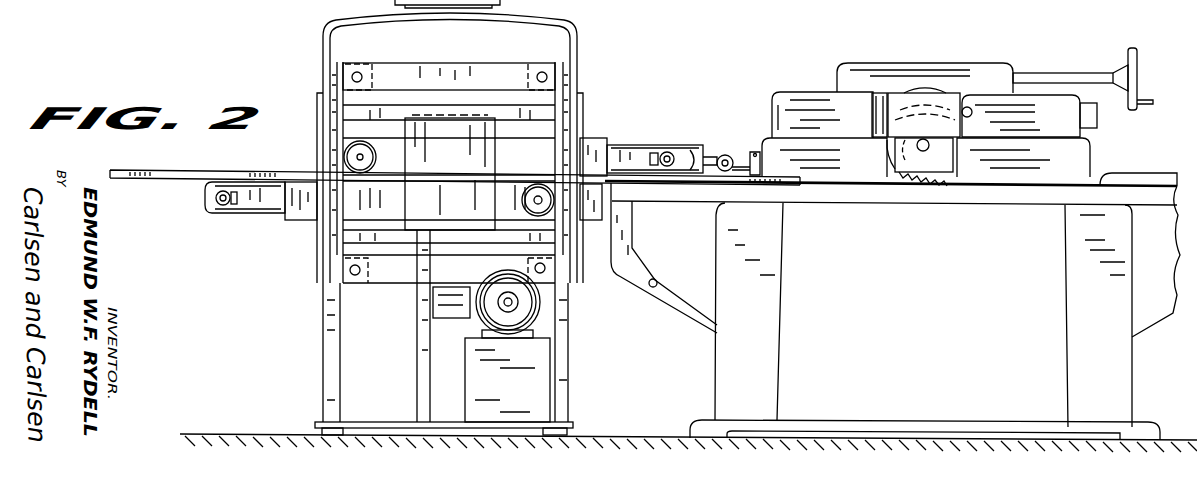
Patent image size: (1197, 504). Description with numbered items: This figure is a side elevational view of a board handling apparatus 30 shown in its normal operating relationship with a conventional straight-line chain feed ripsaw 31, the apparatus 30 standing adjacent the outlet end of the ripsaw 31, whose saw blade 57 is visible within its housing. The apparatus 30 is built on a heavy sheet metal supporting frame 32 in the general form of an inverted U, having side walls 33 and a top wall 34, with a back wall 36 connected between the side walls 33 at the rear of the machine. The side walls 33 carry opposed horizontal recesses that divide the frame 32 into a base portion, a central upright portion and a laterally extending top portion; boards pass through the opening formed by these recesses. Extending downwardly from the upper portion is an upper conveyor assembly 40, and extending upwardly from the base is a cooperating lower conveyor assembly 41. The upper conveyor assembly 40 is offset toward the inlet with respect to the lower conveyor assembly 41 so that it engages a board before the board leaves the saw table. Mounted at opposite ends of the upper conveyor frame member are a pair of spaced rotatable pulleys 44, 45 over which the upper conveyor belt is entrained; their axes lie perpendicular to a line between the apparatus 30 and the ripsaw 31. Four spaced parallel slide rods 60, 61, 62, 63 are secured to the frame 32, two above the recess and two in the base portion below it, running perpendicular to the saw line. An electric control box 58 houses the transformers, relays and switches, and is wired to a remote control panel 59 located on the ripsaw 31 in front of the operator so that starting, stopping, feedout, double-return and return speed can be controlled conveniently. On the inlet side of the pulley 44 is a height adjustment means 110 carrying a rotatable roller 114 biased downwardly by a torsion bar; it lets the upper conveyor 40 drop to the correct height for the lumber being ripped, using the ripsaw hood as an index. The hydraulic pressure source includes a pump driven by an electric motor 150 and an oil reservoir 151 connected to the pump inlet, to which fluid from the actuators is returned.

The board handling apparatus 30 is at (600, 0).
The chain feed ripsaw 31 is at (797, 88).
The supporting frame 32 is at (322, 57).
The side walls 33 is at (320, 365).
The top wall 34 is at (340, 23).
The back wall 36 is at (385, 381).
The upper conveyor assembly 40 is at (598, 137).
The lower conveyor assembly 41 is at (303, 218).
The pulley 44 is at (663, 180).
The pulley 45 is at (343, 153).
The saw blade 57 is at (942, 170).
The electric control box 58 is at (462, 157).
The remote control panel 59 is at (1097, 115).
The slide rod 60 is at (357, 72).
The slide rod 61 is at (542, 72).
The slide rod 62 is at (355, 276).
The slide rod 63 is at (545, 273).
The height adjustment means 110 is at (708, 190).
The roller 114 is at (726, 155).
The electric motor 150 is at (525, 314).
The oil reservoir 151 is at (523, 396).